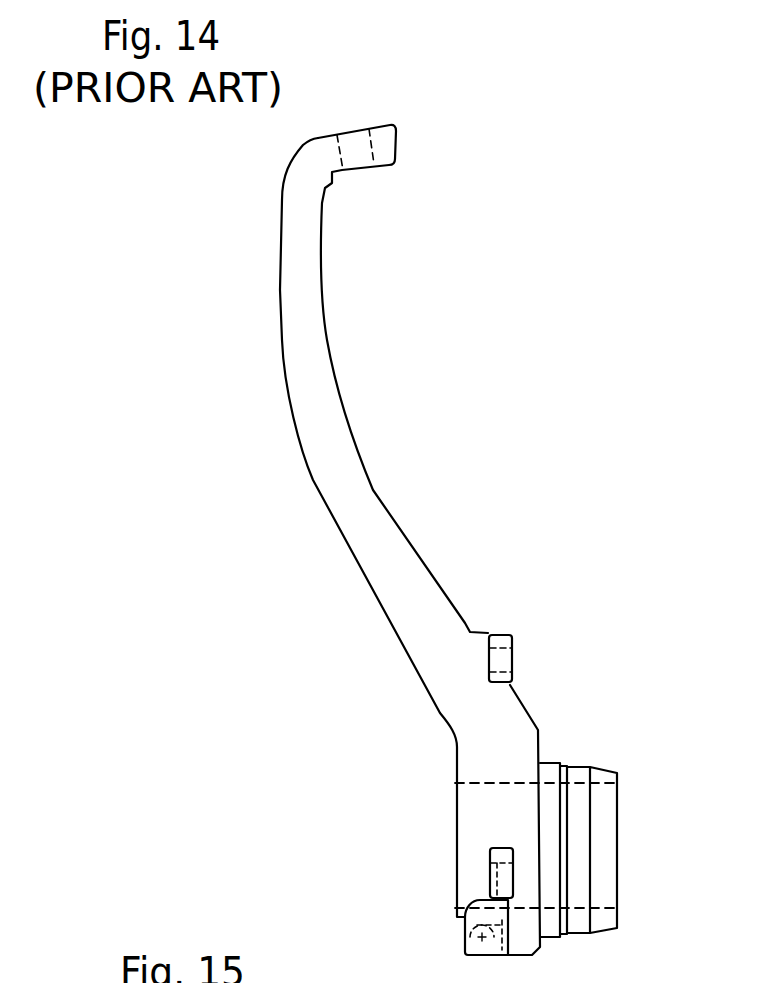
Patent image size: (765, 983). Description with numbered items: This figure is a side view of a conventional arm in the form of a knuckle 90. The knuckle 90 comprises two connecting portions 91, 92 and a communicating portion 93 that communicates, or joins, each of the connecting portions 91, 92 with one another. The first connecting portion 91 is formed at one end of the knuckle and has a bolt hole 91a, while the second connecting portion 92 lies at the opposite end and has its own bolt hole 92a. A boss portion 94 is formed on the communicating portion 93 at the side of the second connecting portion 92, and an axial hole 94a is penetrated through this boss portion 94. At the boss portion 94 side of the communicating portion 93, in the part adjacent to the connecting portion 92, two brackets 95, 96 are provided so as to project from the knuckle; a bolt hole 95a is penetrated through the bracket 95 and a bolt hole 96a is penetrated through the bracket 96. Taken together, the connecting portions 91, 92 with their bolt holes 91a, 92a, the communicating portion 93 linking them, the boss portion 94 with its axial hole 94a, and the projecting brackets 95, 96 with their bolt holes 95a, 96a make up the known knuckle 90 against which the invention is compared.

The knuckle 90 is at (455, 552).
The connecting portion 91 is at (390, 143).
The bolt hole 91a is at (369, 150).
The communicating portion 93 is at (341, 454).
The bracket 95 is at (498, 640).
The bolt hole 95a is at (513, 657).
The boss portion 94 is at (603, 845).
The axial hole 94a is at (603, 905).
The bracket 96 is at (493, 855).
The bolt hole 96a is at (490, 873).
The connecting portion 92 is at (490, 958).
The bolt hole 92a is at (478, 938).